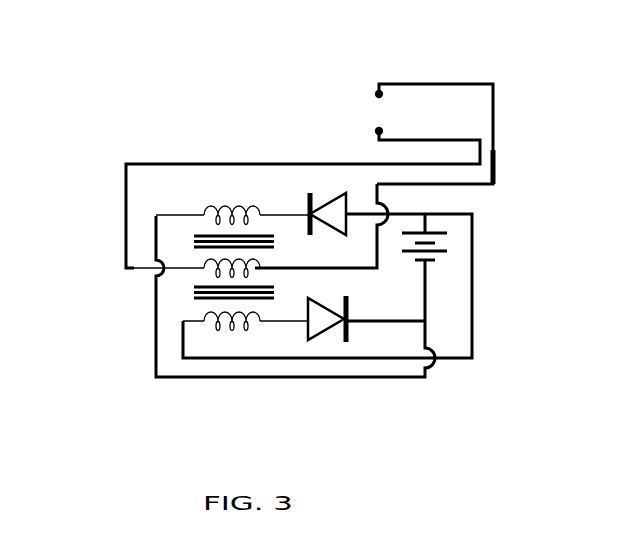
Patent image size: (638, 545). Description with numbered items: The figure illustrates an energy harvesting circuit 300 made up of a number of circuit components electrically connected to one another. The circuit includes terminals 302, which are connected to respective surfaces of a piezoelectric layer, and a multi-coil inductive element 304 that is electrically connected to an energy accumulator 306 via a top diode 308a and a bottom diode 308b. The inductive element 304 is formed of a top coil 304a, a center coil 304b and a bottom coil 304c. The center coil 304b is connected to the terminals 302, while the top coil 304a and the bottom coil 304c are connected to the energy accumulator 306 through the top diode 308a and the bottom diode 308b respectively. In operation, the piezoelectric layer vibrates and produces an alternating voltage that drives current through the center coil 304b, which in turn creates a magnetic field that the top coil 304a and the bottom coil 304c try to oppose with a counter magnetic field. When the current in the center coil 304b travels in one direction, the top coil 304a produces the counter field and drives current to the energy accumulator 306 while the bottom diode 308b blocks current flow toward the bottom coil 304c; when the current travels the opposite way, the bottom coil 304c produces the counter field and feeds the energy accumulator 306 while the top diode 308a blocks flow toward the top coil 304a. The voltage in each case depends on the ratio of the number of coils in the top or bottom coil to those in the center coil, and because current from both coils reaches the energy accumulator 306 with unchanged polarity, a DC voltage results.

The energy harvesting circuit 300 is at (206, 55).
The terminals 302 is at (380, 113).
The multi-coil inductive element 304 is at (162, 297).
The top coil 304a is at (227, 203).
The center coil 304b is at (258, 262).
The bottom coil 304c is at (232, 333).
The energy accumulator 306 is at (462, 229).
The top diode 308a is at (305, 207).
The bottom diode 308b is at (350, 313).